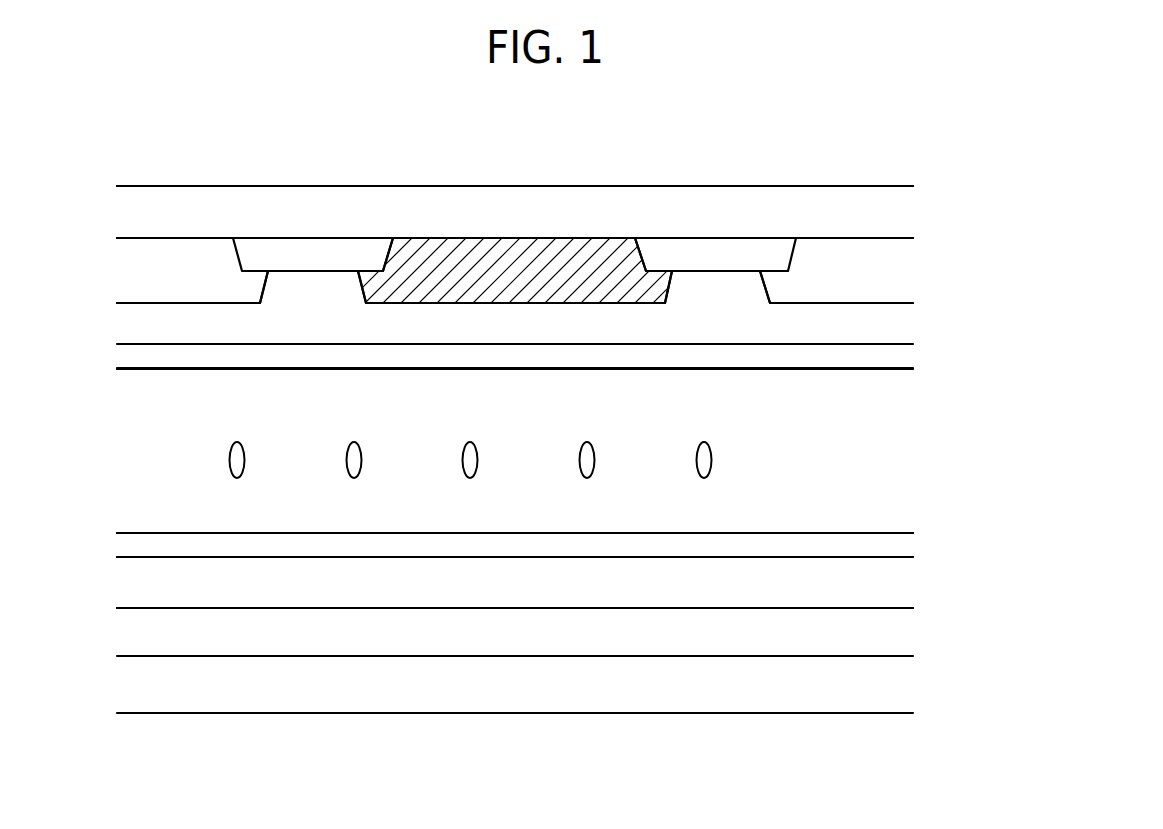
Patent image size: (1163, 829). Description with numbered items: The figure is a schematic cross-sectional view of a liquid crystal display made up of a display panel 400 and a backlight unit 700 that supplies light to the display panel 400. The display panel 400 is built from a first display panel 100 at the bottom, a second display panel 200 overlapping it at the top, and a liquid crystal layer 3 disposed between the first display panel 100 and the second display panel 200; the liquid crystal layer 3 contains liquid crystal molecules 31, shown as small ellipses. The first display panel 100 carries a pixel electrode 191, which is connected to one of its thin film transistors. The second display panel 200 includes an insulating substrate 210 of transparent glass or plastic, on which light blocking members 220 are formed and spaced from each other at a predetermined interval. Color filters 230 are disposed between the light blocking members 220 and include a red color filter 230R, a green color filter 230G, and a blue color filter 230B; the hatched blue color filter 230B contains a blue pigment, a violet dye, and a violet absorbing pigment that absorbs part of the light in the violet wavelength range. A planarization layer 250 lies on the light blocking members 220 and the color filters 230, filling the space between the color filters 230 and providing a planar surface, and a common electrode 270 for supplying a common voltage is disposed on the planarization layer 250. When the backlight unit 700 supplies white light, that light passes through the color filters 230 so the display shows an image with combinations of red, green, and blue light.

The display panel 400 is at (1042, 277).
The second display panel 200 is at (991, 202).
The insulating substrate 210 is at (889, 214).
The light blocking members 220 is at (314, 252).
The color filters 230 is at (627, 440).
The red color filter 230R is at (857, 262).
The green color filter 230G is at (176, 262).
The blue color filter 230B is at (445, 262).
The planarization layer 250 is at (889, 323).
The common electrode 270 is at (889, 354).
The liquid crystal layer 3 is at (889, 470).
The liquid crystal molecules 31 is at (711, 461).
The pixel electrode 191 is at (889, 549).
The first display panel 100 is at (889, 582).
The backlight unit 700 is at (895, 690).